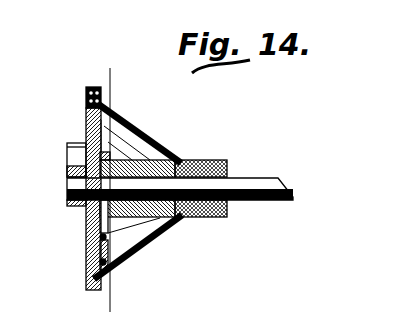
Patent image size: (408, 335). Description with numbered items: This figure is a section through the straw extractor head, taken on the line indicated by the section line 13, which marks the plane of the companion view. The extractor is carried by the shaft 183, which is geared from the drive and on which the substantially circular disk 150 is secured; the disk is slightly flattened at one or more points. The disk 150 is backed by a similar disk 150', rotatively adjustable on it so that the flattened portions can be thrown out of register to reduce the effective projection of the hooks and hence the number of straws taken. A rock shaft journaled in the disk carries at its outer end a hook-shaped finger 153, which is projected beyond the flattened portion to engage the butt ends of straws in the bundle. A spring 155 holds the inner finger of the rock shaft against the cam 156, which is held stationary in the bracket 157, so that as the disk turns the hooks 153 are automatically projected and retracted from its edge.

The circular disk 150 is at (64, 199).
The backing disk 150' is at (69, 84).
The hook-shaped finger 153 is at (77, 158).
The spring 155 is at (101, 137).
The cam 156 is at (105, 225).
The bracket 157 is at (190, 162).
The shaft 183 is at (245, 182).
The section line 13 is at (124, 68).